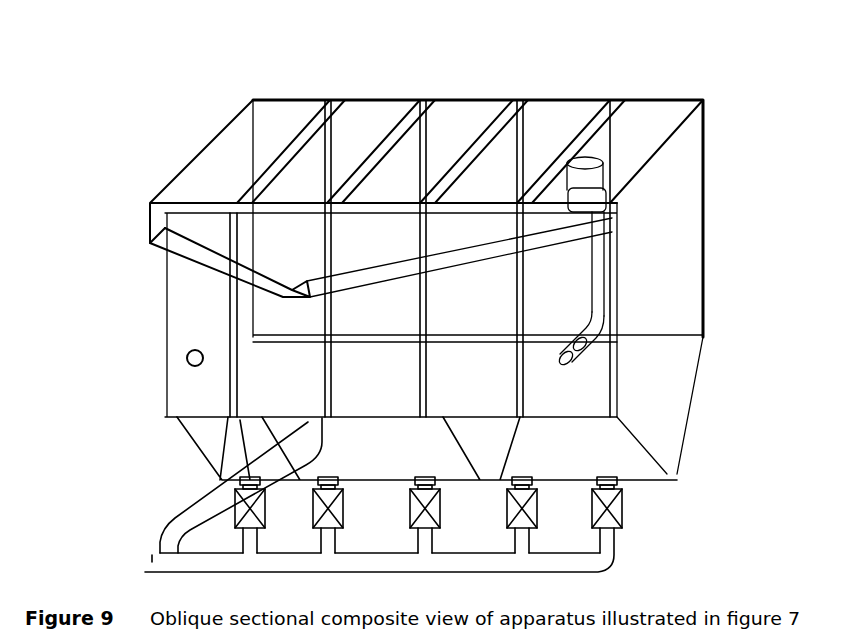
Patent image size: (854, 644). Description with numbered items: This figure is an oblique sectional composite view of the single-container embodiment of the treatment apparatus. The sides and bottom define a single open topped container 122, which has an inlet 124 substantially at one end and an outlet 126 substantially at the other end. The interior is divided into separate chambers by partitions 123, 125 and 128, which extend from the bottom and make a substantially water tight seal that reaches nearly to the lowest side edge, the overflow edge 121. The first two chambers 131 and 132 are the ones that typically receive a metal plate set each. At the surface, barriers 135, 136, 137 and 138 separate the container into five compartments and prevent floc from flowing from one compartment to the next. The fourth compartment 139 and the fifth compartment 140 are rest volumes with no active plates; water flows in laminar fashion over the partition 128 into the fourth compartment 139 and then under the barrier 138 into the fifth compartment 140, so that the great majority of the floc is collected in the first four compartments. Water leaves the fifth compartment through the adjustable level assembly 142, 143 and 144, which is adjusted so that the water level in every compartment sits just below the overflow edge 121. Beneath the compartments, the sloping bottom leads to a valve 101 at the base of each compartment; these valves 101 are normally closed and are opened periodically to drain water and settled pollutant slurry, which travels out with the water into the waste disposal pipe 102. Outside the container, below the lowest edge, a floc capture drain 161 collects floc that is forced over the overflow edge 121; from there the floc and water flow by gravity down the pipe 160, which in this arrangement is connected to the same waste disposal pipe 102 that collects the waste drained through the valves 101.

The valve 101 is at (268, 508).
The waste disposal pipe 102 is at (162, 562).
The overflow edge 121 is at (200, 150).
The open topped container 122 is at (207, 212).
The partition 123 is at (273, 175).
The inlet 124 is at (186, 360).
The partition 125 is at (360, 187).
The outlet 126 is at (585, 360).
The partition 128 is at (500, 372).
The first chamber 131 is at (205, 295).
The second chamber 132 is at (298, 245).
The barrier 135 is at (293, 125).
The barrier 136 is at (393, 127).
The barrier 137 is at (468, 140).
The barrier 138 is at (570, 135).
The fourth compartment 139 is at (480, 300).
The fifth compartment 140 is at (650, 295).
The adjustable level assembly 142 is at (588, 157).
The adjustable level assembly 143 is at (603, 200).
The adjustable level assembly 144 is at (602, 267).
The pipe 160 is at (313, 448).
The floc capture drain 161 is at (387, 287).